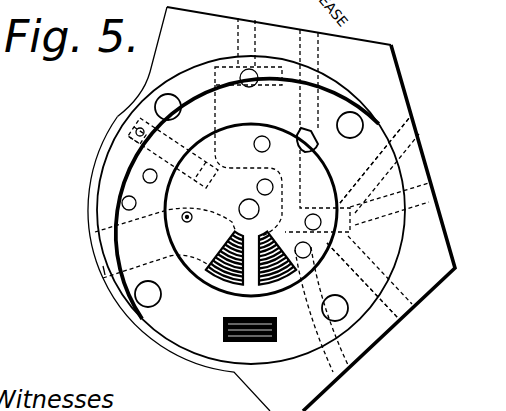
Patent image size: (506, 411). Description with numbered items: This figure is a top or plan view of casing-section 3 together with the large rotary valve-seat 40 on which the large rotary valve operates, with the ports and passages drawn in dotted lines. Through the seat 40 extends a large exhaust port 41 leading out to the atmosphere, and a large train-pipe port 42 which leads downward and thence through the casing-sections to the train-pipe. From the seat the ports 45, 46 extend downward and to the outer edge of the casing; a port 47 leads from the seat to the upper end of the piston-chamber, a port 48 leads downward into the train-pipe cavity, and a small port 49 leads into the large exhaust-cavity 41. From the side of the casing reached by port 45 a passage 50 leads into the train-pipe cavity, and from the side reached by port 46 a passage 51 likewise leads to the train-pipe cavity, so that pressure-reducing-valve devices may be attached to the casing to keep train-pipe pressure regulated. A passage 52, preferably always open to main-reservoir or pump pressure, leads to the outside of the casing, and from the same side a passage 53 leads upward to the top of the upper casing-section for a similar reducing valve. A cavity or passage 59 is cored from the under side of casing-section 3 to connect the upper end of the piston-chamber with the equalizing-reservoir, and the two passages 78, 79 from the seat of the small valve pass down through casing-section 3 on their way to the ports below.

The casing-section 3 is at (107, 271).
The valve-seat 40 is at (234, 126).
The exhaust port 41 is at (220, 270).
The train-pipe port 42 is at (267, 277).
The port 45 is at (309, 256).
The port 46 is at (311, 214).
The port 47 is at (257, 188).
The port 48 is at (258, 136).
The small port 49 is at (187, 222).
The passage 50 is at (385, 312).
The passage 51 is at (395, 137).
The passage 52 is at (318, 147).
The passage 53 is at (252, 70).
The cavity or passage 59 is at (147, 143).
The passage 78 is at (124, 207).
The passage 79 is at (143, 176).